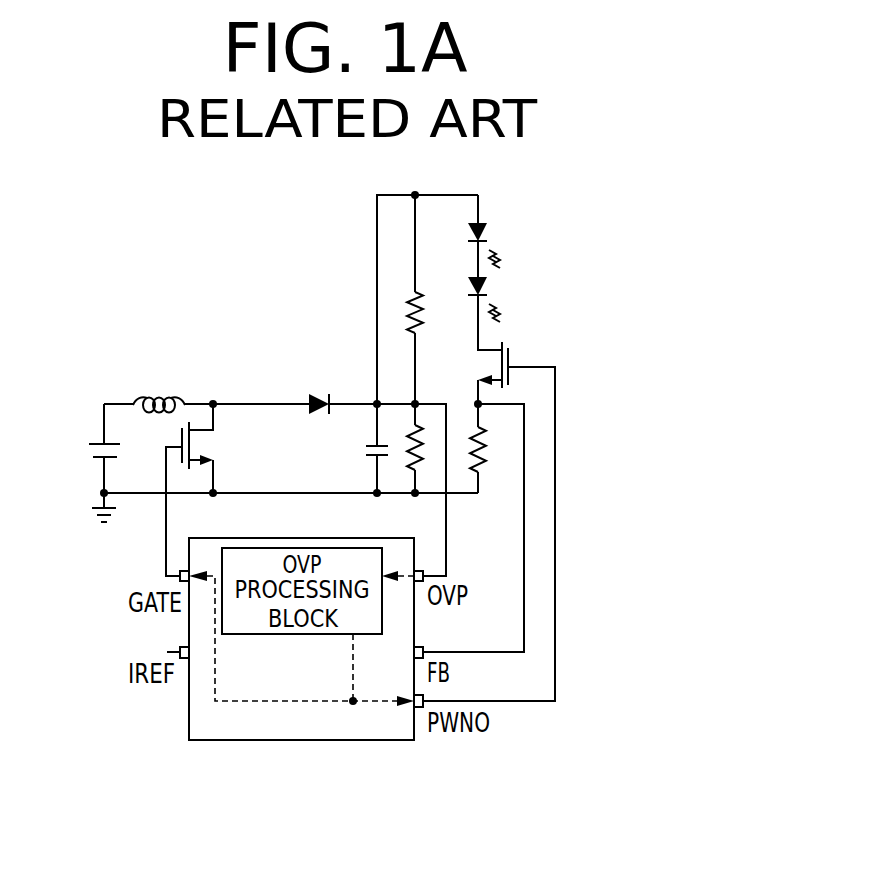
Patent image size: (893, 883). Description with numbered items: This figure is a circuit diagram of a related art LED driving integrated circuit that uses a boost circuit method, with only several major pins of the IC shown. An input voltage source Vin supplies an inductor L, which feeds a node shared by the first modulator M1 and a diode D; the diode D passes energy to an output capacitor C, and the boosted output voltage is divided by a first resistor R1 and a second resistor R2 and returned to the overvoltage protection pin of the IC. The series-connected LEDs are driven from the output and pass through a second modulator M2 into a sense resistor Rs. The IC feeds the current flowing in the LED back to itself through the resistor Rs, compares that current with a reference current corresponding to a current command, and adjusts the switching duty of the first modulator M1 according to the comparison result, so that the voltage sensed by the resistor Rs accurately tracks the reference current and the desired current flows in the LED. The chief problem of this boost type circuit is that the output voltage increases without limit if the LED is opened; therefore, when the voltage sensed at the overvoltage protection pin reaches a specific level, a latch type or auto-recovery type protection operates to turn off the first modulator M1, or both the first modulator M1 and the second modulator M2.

The input voltage source Vin is at (85, 463).
The inductor L is at (159, 389).
The first modulator M1 is at (205, 490).
The diode D is at (319, 390).
The output capacitor C is at (367, 448).
The first feedback resistor R1 is at (432, 312).
The second feedback resistor R2 is at (425, 448).
The resistor Rs is at (492, 438).
The second modulator M2 is at (510, 372).